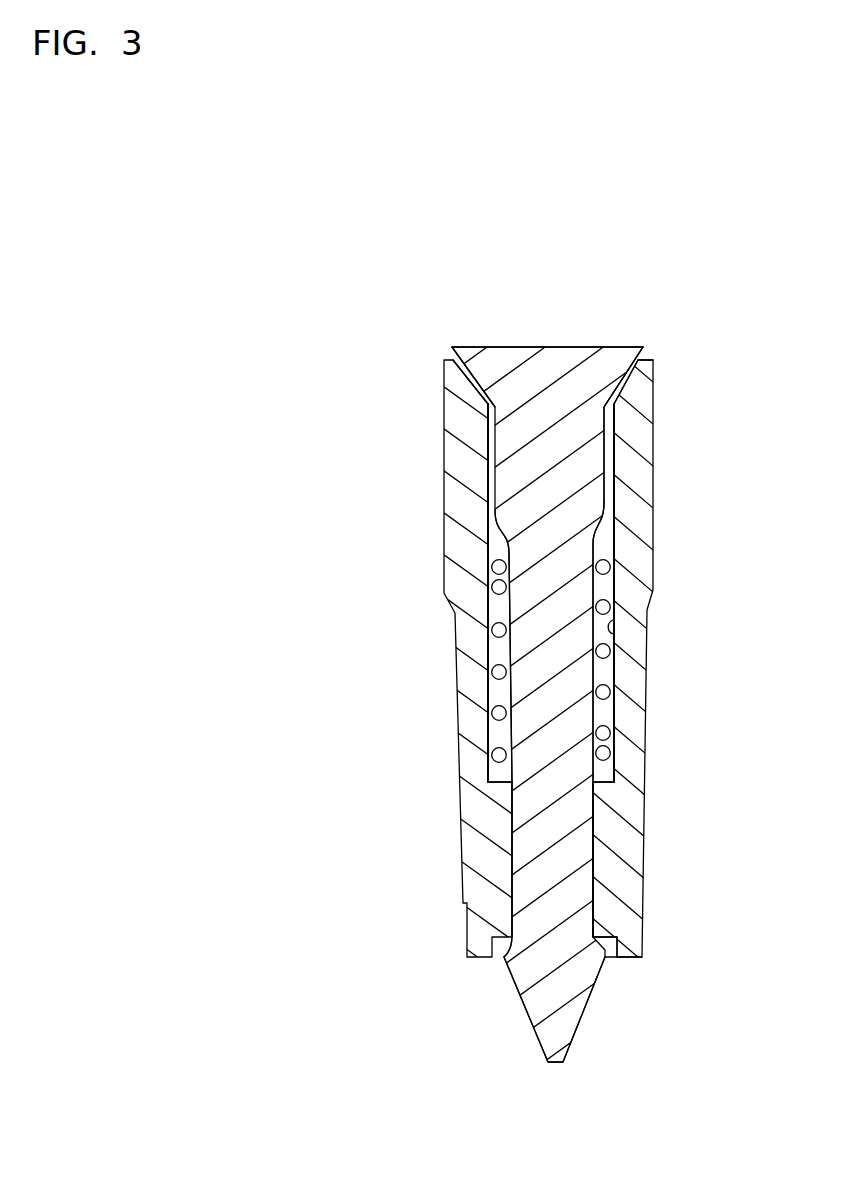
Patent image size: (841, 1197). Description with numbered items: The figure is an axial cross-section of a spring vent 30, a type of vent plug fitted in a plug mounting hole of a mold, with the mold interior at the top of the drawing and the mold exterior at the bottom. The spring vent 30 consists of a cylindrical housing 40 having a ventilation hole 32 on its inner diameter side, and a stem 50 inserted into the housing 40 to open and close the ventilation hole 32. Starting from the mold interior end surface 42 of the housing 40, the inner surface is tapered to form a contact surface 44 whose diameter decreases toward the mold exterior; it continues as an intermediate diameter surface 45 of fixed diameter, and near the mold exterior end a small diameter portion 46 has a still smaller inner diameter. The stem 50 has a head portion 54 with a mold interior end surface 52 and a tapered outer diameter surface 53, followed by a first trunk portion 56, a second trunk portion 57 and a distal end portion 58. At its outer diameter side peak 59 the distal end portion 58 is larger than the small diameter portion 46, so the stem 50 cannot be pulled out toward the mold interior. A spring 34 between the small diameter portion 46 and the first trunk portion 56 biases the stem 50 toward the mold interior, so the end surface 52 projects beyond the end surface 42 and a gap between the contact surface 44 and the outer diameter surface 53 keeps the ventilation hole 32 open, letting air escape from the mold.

The spring vent 30 is at (563, 250).
The ventilation hole 32 is at (603, 540).
The spring 34 is at (600, 650).
The cylindrical housing 40 is at (633, 502).
The mold interior end surface 42 is at (647, 358).
The contact surface 44 is at (624, 386).
The intermediate diameter surface 45 is at (613, 633).
The small diameter portion 46 is at (612, 840).
The stem 50 is at (590, 450).
The mold interior end surface 52 is at (547, 347).
The outer diameter surface 53 is at (623, 387).
The head portion 54 is at (497, 355).
The first trunk portion 56 is at (507, 474).
The second trunk portion 57 is at (522, 688).
The distal end portion 58 is at (540, 1002).
The outer diameter side peak 59 is at (497, 958).